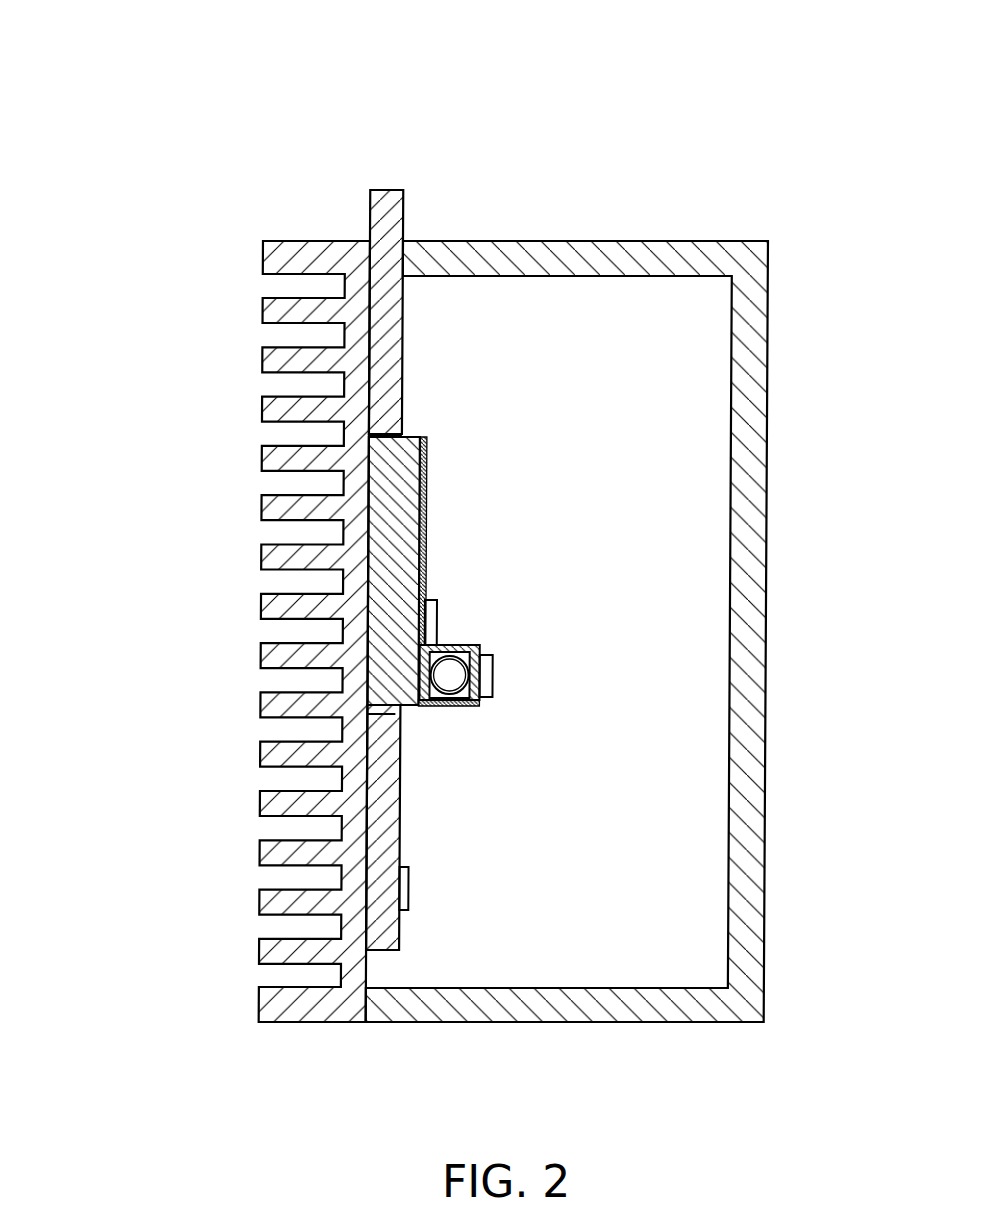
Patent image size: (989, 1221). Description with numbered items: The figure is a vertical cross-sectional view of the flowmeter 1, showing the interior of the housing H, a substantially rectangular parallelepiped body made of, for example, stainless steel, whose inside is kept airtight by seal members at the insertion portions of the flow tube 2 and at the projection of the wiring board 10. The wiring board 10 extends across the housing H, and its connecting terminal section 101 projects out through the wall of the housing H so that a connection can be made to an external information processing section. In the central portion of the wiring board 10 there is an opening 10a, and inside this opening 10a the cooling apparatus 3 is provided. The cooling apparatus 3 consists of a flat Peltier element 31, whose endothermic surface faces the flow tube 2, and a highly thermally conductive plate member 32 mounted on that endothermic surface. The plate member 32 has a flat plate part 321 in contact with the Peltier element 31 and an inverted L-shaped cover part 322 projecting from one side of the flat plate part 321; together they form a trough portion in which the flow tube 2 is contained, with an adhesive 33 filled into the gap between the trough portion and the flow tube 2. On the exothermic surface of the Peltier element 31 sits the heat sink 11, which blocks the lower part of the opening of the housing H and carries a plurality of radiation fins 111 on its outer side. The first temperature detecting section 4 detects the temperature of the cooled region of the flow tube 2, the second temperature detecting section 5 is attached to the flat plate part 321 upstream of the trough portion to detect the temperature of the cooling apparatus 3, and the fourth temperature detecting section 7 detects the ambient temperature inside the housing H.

The flowmeter 1 is at (135, 160).
The wiring board 10 is at (453, 546).
The opening 10a is at (410, 428).
The connecting terminal section 101 is at (403, 200).
The heat sink 11 is at (249, 585).
The radiation fins 111 is at (262, 355).
The flow tube 2 is at (442, 707).
The cooling apparatus 3 is at (495, 586).
The Peltier element 31 is at (407, 707).
The plate member 32 is at (428, 463).
The flat plate part 321 is at (428, 527).
The cover part 322 is at (482, 707).
The adhesive 33 is at (489, 699).
The first temperature detecting section 4 is at (495, 672).
The second temperature detecting section 5 is at (439, 600).
The fourth temperature detecting section 7 is at (412, 888).
The housing H is at (767, 442).